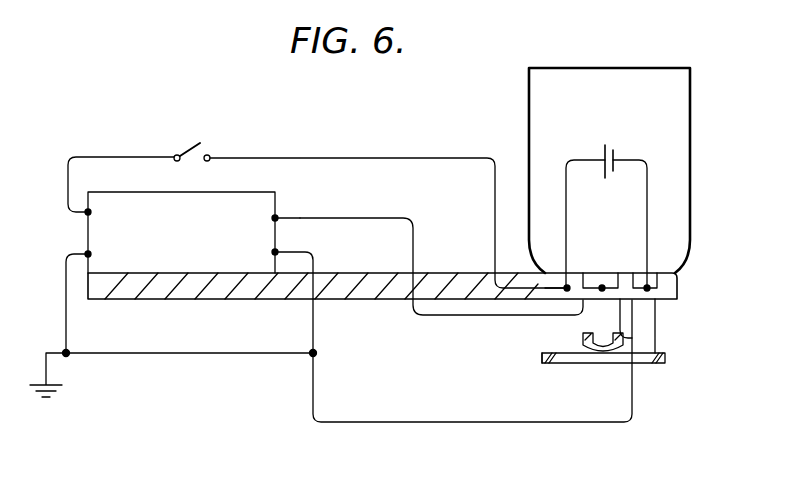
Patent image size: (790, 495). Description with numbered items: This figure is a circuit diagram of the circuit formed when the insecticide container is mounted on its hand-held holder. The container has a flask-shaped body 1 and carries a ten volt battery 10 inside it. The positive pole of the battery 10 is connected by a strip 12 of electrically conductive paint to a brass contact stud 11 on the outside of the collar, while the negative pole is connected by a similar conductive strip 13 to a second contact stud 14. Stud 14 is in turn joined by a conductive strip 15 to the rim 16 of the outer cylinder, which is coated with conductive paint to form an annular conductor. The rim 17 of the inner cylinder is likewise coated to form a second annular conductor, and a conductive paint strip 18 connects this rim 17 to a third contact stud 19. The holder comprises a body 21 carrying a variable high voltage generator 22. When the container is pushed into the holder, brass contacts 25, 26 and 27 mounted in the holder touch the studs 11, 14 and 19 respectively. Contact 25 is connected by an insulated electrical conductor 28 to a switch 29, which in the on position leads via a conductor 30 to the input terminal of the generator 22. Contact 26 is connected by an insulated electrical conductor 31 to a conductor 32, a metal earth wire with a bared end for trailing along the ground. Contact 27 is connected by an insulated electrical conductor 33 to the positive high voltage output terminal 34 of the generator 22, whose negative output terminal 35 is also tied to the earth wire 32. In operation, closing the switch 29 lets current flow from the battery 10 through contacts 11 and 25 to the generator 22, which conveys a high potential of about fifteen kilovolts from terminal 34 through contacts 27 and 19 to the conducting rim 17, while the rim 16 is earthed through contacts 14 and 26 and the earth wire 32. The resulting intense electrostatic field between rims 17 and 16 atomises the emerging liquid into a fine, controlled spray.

The body 1 is at (690, 80).
The battery 10 is at (606, 150).
The contact stud 11 is at (526, 314).
The strip of electrically conductive paint 12 is at (566, 213).
The conductive strip 13 is at (647, 190).
The contact stud 14 is at (694, 287).
The conductive strip 15 is at (660, 343).
The rim 16 is at (545, 361).
The rim 17 is at (617, 350).
The conductive paint strip 18 is at (632, 311).
The contact stud 19 is at (671, 258).
The body 21 is at (188, 287).
The variable high voltage generator 22 is at (113, 227).
The brass contact 25 is at (566, 278).
The brass contact 26 is at (647, 288).
The brass contact 27 is at (602, 288).
The insulated electrical conductor 28 is at (363, 157).
The switch 29 is at (190, 146).
The conductor 30 is at (68, 184).
The insulated electrical conductor 31 is at (400, 395).
The conductor 32 is at (56, 391).
The insulated electrical conductor 33 is at (455, 222).
The positive high voltage output terminal 34 is at (272, 218).
The negative output terminal 35 is at (272, 252).